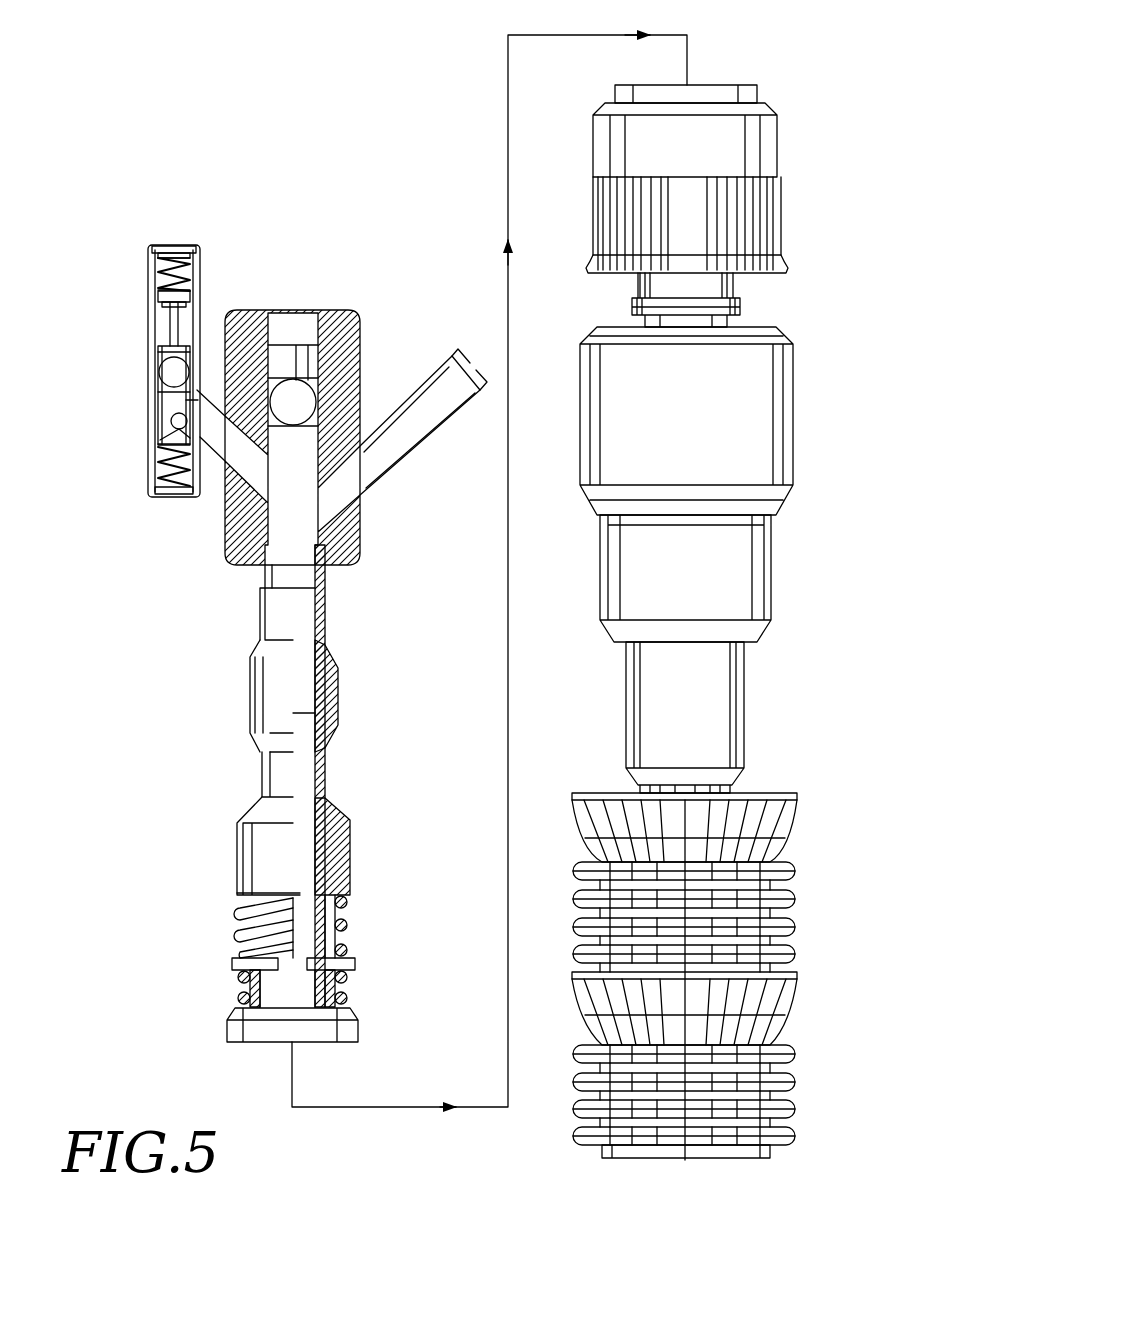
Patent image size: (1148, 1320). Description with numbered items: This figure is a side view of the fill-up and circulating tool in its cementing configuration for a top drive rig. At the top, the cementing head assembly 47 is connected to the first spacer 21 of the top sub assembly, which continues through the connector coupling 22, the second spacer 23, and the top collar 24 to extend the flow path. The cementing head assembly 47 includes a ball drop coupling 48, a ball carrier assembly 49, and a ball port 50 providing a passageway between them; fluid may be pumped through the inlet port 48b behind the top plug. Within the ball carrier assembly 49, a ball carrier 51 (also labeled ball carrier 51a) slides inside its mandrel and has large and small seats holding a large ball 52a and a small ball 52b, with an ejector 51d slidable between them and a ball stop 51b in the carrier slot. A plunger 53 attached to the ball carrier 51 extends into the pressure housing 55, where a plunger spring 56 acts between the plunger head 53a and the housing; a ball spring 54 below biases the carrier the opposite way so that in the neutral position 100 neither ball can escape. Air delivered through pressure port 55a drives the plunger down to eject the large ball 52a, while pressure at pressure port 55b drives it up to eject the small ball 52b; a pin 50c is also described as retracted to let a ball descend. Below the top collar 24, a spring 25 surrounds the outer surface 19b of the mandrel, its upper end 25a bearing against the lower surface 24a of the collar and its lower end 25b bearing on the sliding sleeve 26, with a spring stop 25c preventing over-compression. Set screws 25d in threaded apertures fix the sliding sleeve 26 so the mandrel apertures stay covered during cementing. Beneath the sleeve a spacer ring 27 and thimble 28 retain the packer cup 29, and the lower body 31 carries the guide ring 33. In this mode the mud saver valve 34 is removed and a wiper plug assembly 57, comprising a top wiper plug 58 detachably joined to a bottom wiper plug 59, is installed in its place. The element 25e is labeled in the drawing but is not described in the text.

The ball carrier assembly 49 is at (190, 246).
The pressure port 55a is at (170, 256).
The plunger spring 56 is at (193, 262).
The pressure port 55b is at (157, 300).
The pressure housing 55 is at (200, 270).
The plunger 53 is at (170, 322).
The plunger head 53a is at (186, 299).
The cementing head assembly 47 is at (355, 318).
The ball carrier 51a is at (165, 352).
The ball drop coupling 48 is at (296, 388).
The ball stop 51b is at (160, 388).
The large ball 52a is at (159, 372).
The neutral position 100 is at (186, 400).
The ejector 51d is at (171, 421).
The pin 50c is at (168, 443).
The small ball 52b is at (160, 463).
The ball carrier 51 is at (170, 468).
The ball port 50 is at (220, 464).
The ball spring 54 is at (180, 492).
The inlet port 48b is at (444, 418).
The first spacer 21 is at (326, 618).
The connector coupling 22 is at (339, 700).
The second spacer 23 is at (326, 778).
The top collar 24 is at (351, 838).
The lower surface of top collar 24a is at (238, 894).
The outer surface of mandrel 19b is at (256, 935).
The spring 25 is at (286, 950).
The set screw 25d is at (232, 965).
The lower end of spring 25b is at (238, 1000).
The sliding sleeve 26 is at (243, 1030).
The upper end of spring 25a is at (348, 903).
The sleeve 25e is at (336, 947).
The spring stop 25c is at (333, 990).
The spacer ring 27 is at (750, 98).
The thimble 28 is at (755, 147).
The packer cup 29 is at (742, 205).
The guide ring 33 is at (730, 396).
The lower body 31 is at (705, 561).
The mud saver valve 34 is at (705, 701).
The top wiper plug 58 is at (796, 896).
The wiper plug assembly 57 is at (808, 1010).
The bottom wiper plug 59 is at (796, 1079).